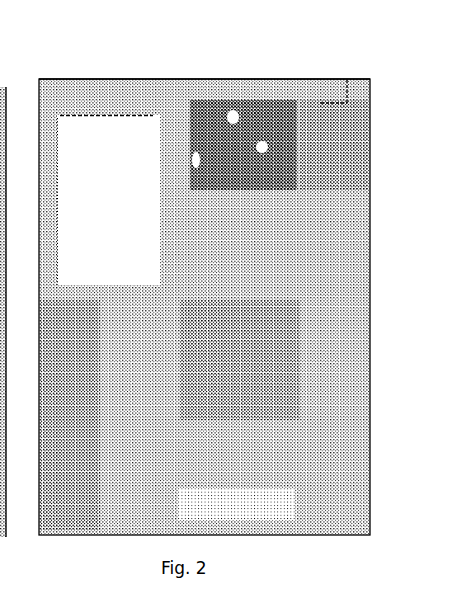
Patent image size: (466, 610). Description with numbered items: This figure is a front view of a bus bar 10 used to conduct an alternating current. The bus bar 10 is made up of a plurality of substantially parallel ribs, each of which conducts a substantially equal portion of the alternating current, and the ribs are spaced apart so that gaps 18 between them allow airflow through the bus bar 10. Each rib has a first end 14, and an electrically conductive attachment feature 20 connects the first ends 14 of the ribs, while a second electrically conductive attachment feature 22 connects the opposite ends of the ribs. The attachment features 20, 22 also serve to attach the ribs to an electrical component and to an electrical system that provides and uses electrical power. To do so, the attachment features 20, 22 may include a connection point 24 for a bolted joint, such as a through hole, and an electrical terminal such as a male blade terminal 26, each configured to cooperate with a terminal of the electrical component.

The bus bar 10 is at (367, 70).
The first end 14 is at (275, 78).
The gaps 18 is at (222, 352).
The electrically conductive attachment feature 20 is at (312, 157).
The electrically conductive attachment feature 22 is at (0, 385).
The connection point 24 is at (230, 137).
The male blade terminal 26 is at (105, 345).